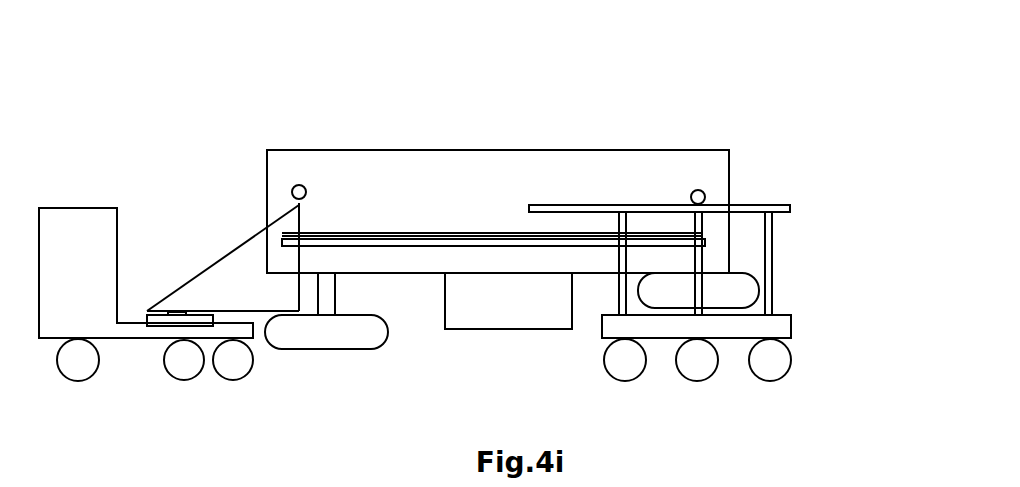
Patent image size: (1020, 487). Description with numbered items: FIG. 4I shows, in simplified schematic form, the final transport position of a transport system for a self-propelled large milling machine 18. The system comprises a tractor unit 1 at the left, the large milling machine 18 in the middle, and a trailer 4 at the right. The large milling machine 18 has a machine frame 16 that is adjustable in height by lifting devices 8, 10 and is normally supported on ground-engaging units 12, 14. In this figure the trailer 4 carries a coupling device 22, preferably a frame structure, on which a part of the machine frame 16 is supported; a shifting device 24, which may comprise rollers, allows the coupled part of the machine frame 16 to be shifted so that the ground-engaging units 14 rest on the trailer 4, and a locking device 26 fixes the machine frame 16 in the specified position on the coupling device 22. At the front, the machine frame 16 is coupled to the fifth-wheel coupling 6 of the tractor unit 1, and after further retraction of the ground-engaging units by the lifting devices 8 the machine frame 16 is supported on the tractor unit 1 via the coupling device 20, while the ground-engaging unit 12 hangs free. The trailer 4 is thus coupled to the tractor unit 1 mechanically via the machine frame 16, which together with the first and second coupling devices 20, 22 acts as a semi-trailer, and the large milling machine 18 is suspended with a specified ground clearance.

The tractor unit 1 is at (103, 173).
The trailer 4 is at (848, 285).
The fifth-wheel coupling 6 is at (174, 320).
The lifting devices 8 is at (325, 294).
The lifting devices 10 is at (683, 275).
The ground-engaging unit 12 is at (343, 335).
The ground-engaging units 14 is at (674, 294).
The machine frame 16 is at (420, 145).
The large milling machine 18 is at (635, 91).
The coupling device 20 is at (208, 262).
The coupling device 22 is at (798, 192).
The shifting device 24 is at (660, 205).
The locking device 26 is at (737, 205).